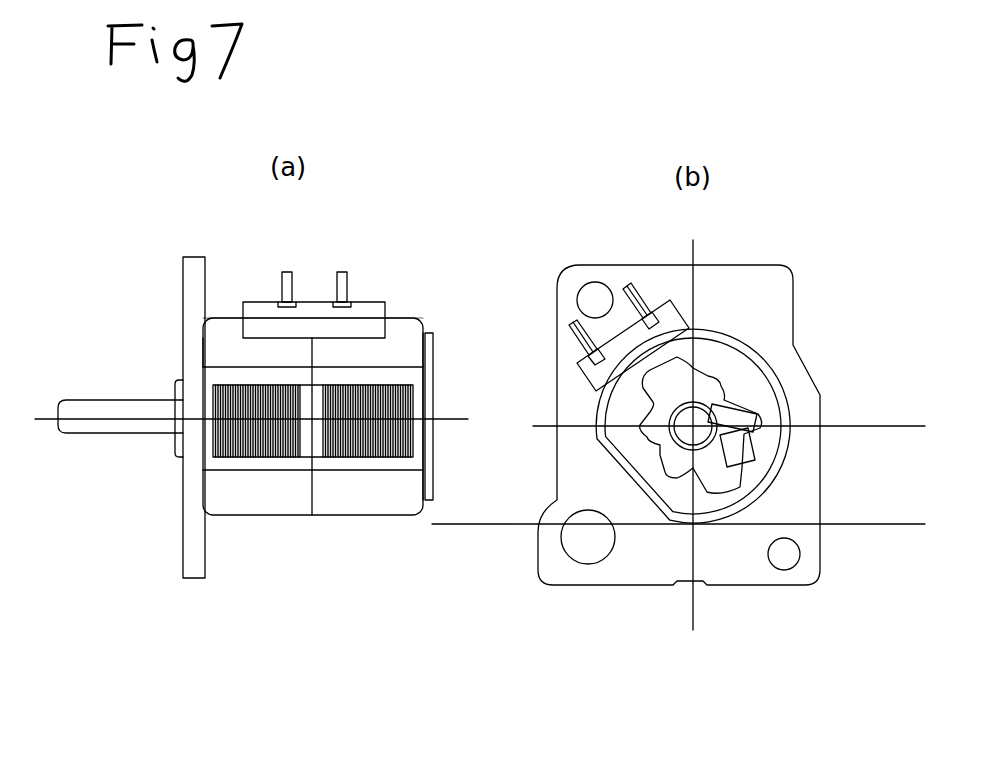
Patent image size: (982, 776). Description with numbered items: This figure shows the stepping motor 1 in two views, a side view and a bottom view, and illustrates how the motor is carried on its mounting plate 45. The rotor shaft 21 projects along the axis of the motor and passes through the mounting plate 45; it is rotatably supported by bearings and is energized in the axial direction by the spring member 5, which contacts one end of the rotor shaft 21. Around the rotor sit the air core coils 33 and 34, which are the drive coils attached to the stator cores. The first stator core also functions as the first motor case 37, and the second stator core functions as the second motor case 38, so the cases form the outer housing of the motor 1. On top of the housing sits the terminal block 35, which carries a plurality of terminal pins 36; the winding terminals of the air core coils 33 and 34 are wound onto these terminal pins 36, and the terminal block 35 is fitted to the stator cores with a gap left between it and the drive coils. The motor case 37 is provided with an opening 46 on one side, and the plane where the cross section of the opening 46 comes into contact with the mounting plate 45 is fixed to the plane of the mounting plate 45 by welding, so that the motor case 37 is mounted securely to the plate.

The stepping motor 1 is at (416, 266).
The spring member 5 is at (727, 400).
The rotor shaft 21 is at (97, 425).
The air core coil 33 is at (212, 395).
The air core coil 34 is at (432, 393).
The terminal block 35 is at (370, 305).
The terminal pins 36 is at (335, 278).
The first motor case 37 is at (223, 335).
The second motor case 38 is at (412, 325).
The mounting plate 45 is at (197, 282).
The opening 46 is at (278, 465).